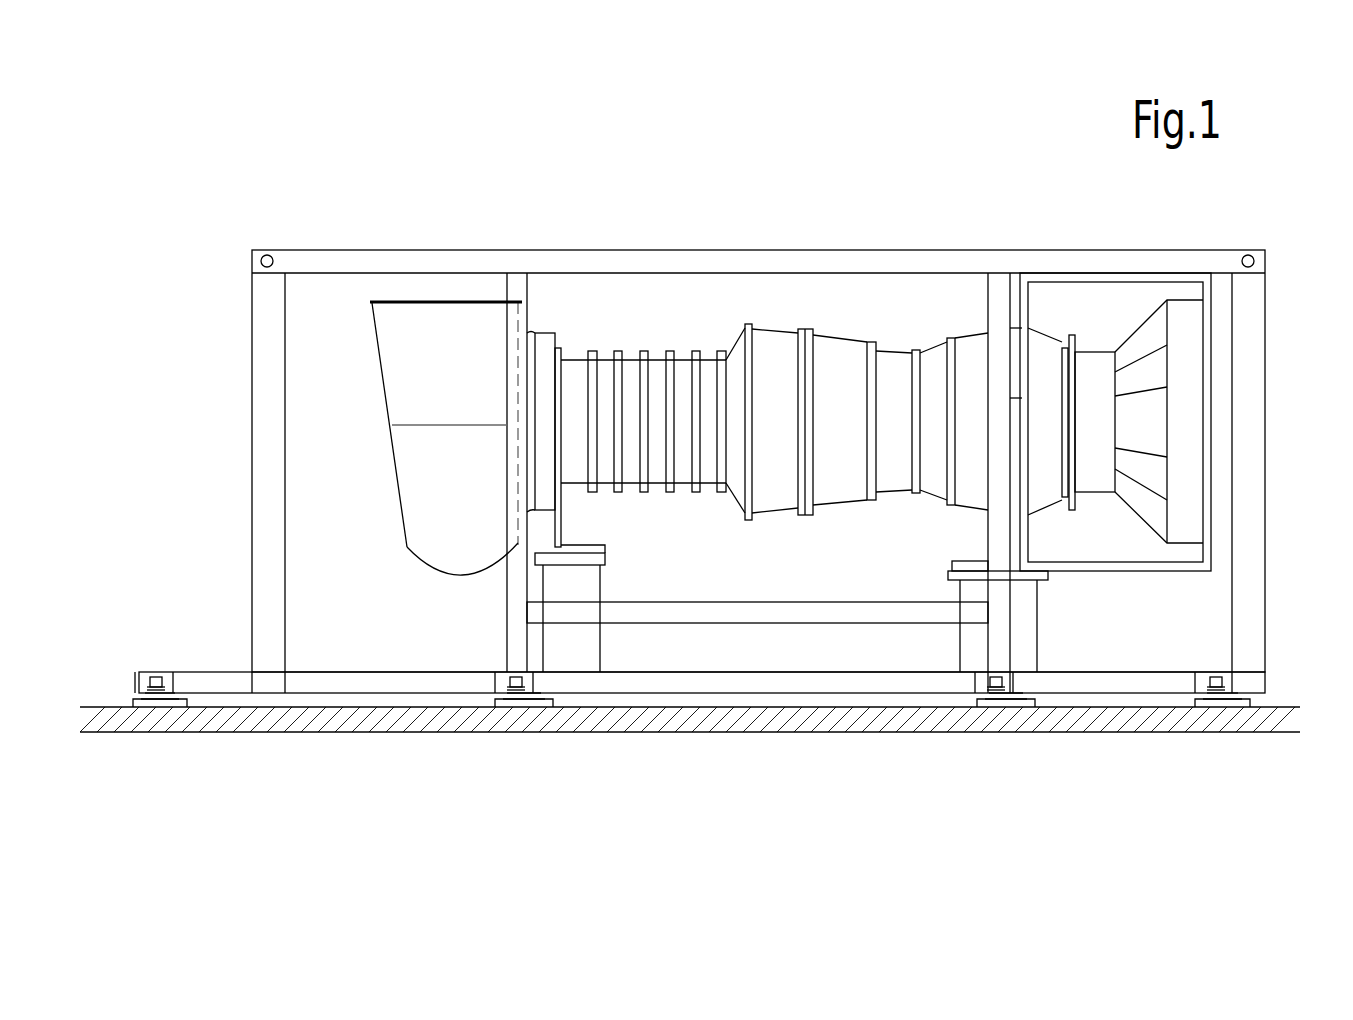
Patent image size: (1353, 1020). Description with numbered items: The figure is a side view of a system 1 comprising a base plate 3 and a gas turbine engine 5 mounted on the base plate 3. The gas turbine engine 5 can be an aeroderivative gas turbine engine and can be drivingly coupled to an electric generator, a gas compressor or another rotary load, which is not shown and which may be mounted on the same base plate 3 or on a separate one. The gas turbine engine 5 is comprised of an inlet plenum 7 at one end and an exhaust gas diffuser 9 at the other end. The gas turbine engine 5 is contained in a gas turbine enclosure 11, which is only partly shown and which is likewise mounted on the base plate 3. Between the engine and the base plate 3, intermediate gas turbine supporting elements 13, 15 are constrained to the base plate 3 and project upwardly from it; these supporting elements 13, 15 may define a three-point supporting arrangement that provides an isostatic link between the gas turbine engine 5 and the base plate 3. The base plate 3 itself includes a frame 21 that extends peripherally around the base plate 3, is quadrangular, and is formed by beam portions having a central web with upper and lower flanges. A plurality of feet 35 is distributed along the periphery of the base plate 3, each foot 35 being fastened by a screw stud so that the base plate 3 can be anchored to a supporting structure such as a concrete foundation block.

The system 1 is at (880, 197).
The base plate 3 is at (1210, 622).
The gas turbine engine 5 is at (728, 332).
The inlet plenum 7 is at (413, 393).
The exhaust gas diffuser 9 is at (1078, 367).
The gas turbine enclosure 11 is at (453, 260).
The gas turbine supporting element 13 is at (582, 577).
The gas turbine supporting element 15 is at (1020, 595).
The frame 21 is at (818, 680).
The feet 35 is at (153, 700).